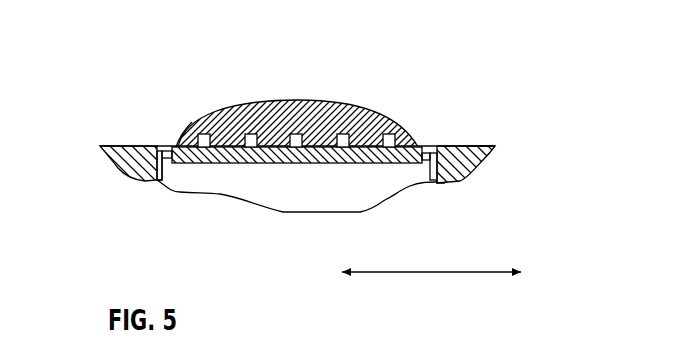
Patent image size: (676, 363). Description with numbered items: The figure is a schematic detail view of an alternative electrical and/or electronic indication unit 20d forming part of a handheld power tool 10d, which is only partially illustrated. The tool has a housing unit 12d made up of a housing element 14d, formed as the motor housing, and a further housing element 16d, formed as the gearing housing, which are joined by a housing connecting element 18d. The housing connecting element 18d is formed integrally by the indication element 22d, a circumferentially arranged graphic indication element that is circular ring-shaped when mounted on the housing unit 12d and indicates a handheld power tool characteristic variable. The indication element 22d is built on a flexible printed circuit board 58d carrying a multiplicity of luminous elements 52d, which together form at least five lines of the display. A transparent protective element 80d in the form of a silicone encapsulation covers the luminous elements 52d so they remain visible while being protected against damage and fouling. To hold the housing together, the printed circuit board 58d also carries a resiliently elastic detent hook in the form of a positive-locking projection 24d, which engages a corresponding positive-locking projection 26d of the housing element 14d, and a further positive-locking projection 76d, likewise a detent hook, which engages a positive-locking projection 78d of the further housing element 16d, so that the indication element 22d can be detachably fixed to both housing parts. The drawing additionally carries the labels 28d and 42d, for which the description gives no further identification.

The handheld power tool 10d is at (77, 126).
The housing unit 12d is at (545, 147).
The housing element 14d is at (495, 146).
The further housing element 16d is at (120, 146).
The housing connecting element 18d is at (230, 163).
The indication element 22d is at (298, 155).
The electrical and/or electronic indication unit 20d is at (150, 200).
The positive-locking projection 24d is at (434, 183).
The positive-locking projection of the housing element 26d is at (421, 149).
The surface region 28d is at (469, 146).
The width / extension 42d is at (476, 272).
The luminous element 52d is at (302, 107).
The printed circuit board 58d is at (300, 163).
The further positive-locking projection 76d is at (172, 163).
The positive-locking projection of the further housing element 78d is at (175, 143).
The protective element 80d is at (358, 107).